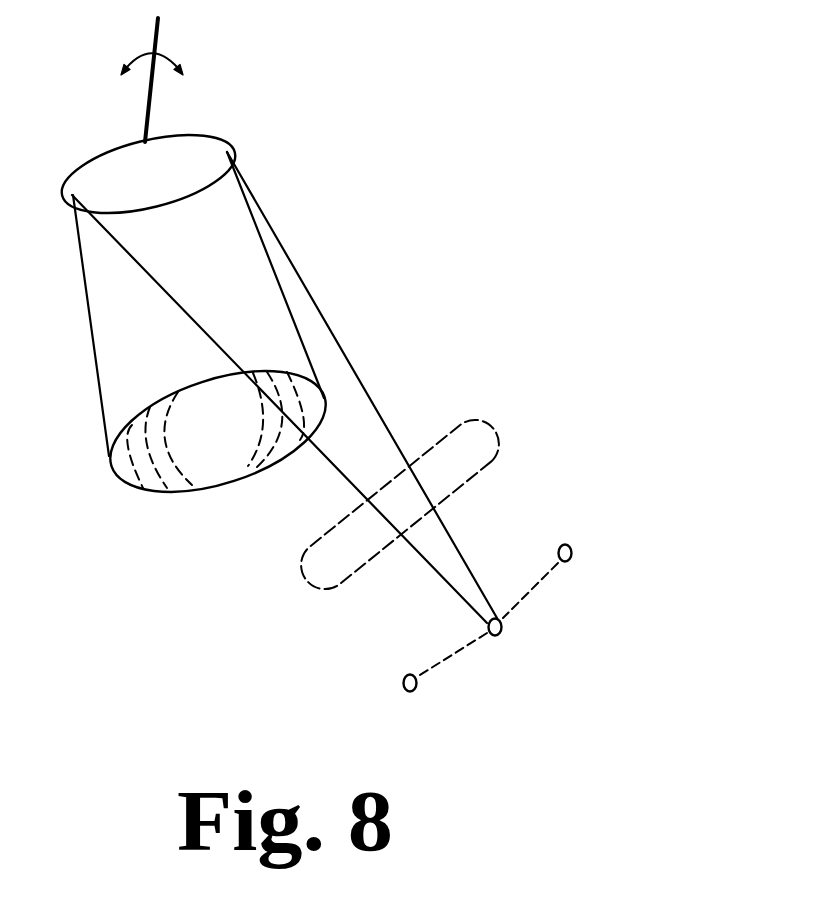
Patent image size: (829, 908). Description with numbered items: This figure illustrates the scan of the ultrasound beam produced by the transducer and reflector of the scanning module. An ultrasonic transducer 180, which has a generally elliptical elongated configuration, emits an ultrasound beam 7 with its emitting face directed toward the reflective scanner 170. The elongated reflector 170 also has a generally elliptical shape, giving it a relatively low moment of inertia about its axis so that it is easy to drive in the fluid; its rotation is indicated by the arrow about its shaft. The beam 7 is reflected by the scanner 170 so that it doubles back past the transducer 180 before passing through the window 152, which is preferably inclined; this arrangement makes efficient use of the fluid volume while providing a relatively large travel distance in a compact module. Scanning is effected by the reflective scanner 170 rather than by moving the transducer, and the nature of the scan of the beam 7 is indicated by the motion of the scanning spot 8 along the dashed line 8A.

The reflective scanner 170 is at (230, 140).
The ultrasonic transducer 180 is at (130, 491).
The window 152 is at (480, 431).
The beam 7 is at (480, 586).
The scanning spot 8 is at (503, 628).
The dashed line 8A is at (460, 652).